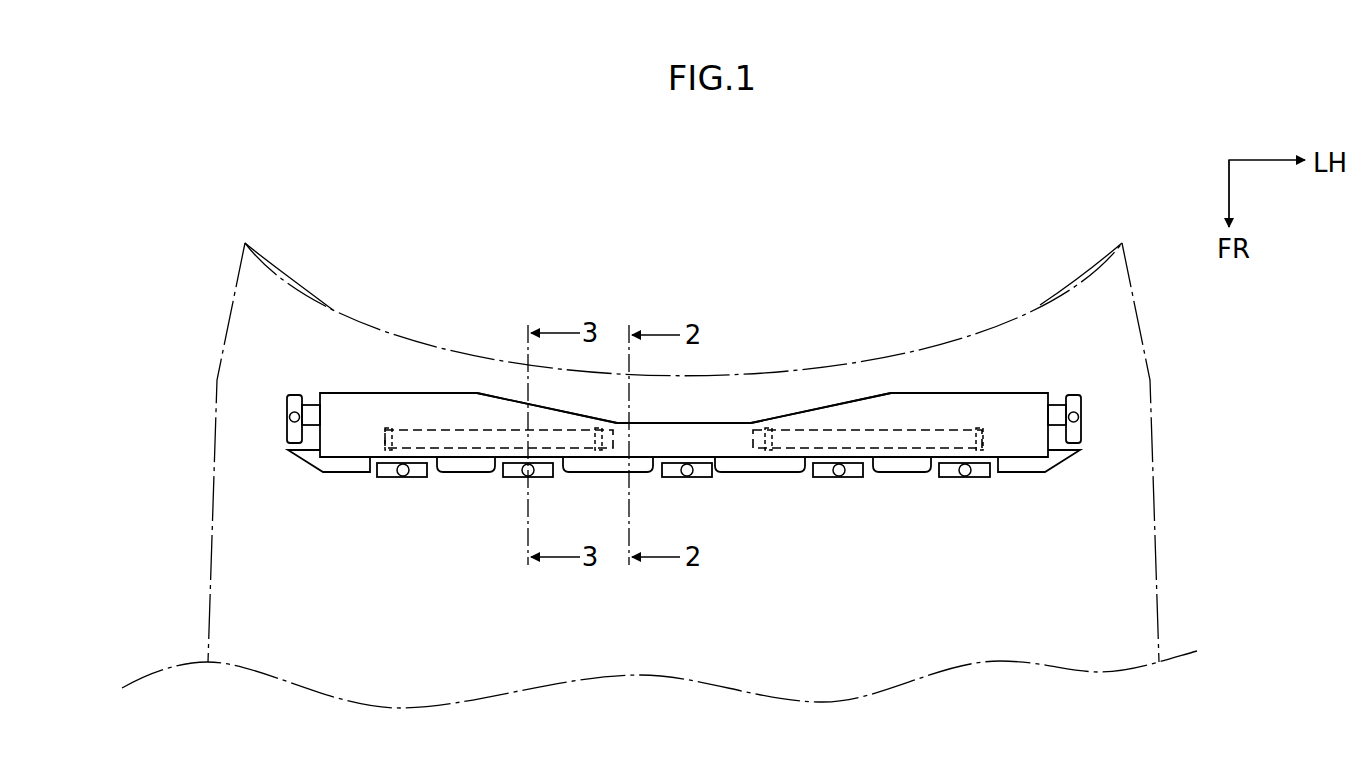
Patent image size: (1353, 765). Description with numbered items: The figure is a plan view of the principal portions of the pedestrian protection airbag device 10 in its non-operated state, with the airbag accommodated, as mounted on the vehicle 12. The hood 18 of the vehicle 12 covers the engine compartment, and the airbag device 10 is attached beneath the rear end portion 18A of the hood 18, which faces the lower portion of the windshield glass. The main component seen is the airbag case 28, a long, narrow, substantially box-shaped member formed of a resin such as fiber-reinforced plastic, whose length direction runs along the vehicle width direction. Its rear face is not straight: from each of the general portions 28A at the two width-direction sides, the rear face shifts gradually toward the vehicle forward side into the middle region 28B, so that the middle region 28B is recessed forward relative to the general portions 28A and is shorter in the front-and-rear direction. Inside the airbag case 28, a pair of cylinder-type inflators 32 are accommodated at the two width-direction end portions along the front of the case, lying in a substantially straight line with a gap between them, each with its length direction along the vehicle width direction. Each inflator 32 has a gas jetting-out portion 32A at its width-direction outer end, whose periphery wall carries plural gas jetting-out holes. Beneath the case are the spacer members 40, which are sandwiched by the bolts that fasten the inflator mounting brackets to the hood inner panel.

The pedestrian protection airbag device 10 is at (682, 376).
The vehicle 12 is at (730, 468).
The hood 18 is at (708, 468).
The rear end portion of the hood 18A is at (606, 390).
The airbag case 28 is at (684, 337).
The general portions 28A is at (450, 393).
The middle region 28B is at (730, 423).
The inflators 32 is at (682, 328).
The gas jetting-out portion 32A is at (384, 428).
The spacer members 40 is at (388, 478).